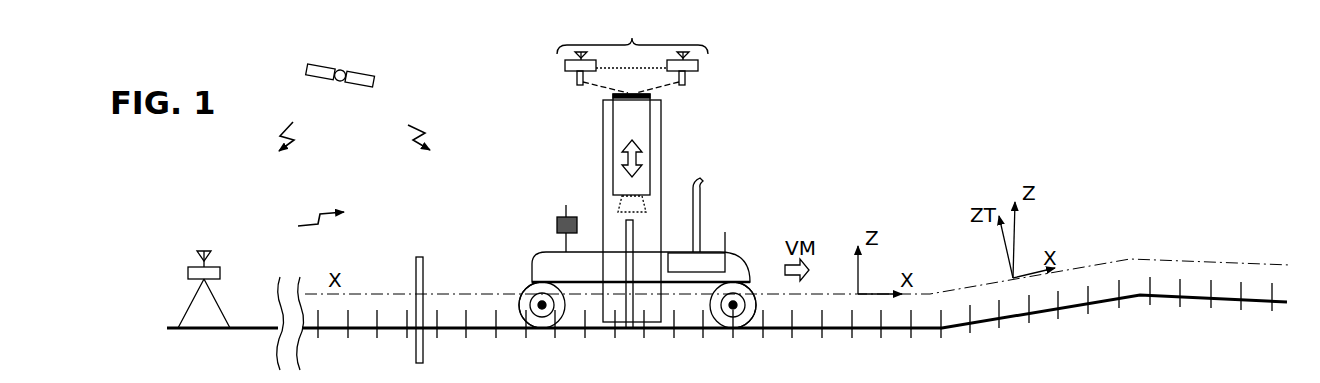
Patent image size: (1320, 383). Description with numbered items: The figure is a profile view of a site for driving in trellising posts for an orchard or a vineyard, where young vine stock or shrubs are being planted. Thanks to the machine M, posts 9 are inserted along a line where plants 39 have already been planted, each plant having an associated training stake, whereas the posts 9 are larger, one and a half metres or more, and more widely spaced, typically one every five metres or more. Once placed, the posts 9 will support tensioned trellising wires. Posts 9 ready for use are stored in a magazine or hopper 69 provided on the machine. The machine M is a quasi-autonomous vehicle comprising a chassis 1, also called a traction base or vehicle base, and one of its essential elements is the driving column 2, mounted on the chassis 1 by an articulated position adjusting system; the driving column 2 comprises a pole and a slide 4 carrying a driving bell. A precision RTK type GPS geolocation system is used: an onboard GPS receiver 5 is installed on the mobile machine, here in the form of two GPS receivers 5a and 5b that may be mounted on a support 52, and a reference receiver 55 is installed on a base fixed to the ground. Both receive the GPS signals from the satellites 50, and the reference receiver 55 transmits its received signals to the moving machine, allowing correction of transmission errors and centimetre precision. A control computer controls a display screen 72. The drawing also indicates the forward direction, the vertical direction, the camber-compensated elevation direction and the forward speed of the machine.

The chassis 1 is at (738, 255).
The driving column 2 is at (663, 138).
The slide 4 is at (647, 172).
The onboard GPS receiver 5 is at (640, 49).
The GPS receiver 5a is at (698, 65).
The GPS receiver 5b is at (565, 65).
The posts 9 is at (423, 272).
The plants 39 is at (1211, 290).
The satellites 50 is at (346, 68).
The support 52 is at (601, 88).
The reference receiver 55 is at (205, 240).
The magazine or hopper 69 is at (726, 243).
The display screen 72 is at (557, 224).
The machine M is at (753, 158).